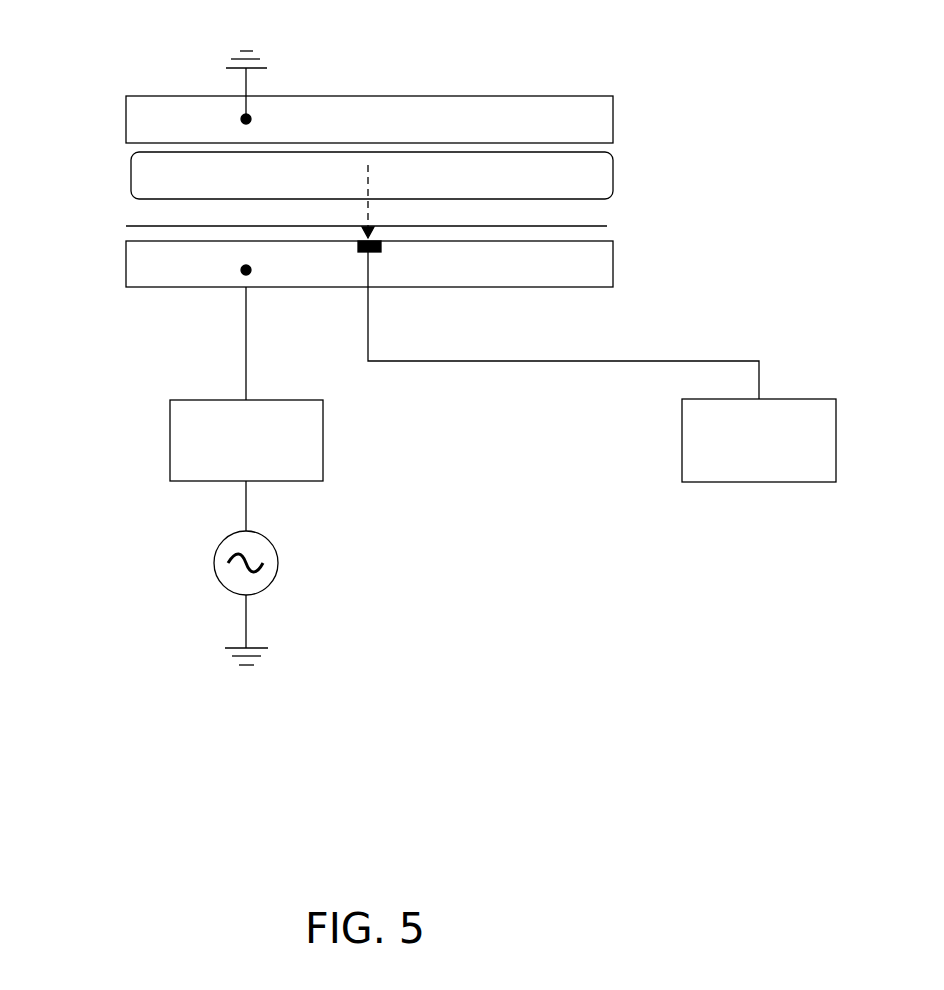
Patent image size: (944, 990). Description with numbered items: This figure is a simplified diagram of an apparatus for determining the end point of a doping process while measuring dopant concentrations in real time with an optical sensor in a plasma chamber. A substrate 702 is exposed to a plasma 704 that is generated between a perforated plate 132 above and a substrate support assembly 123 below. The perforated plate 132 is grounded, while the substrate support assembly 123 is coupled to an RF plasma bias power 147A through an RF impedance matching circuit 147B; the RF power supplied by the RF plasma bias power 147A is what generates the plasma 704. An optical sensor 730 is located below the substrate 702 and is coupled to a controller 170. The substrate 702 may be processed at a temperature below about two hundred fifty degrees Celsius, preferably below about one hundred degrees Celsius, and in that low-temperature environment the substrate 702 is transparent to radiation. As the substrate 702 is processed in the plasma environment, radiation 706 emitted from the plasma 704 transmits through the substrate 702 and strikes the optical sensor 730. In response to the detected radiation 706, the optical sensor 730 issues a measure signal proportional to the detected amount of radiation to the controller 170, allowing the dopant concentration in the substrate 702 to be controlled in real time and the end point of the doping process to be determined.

The perforated plate 132 is at (202, 131).
The plasma 704 is at (202, 187).
The substrate 702 is at (607, 226).
The substrate support assembly 123 is at (202, 275).
The radiation 706 is at (369, 181).
The optical sensor 730 is at (381, 246).
The controller 170 is at (682, 432).
The RF impedance matching circuit 147B is at (170, 438).
The RF plasma bias power 147A is at (214, 562).